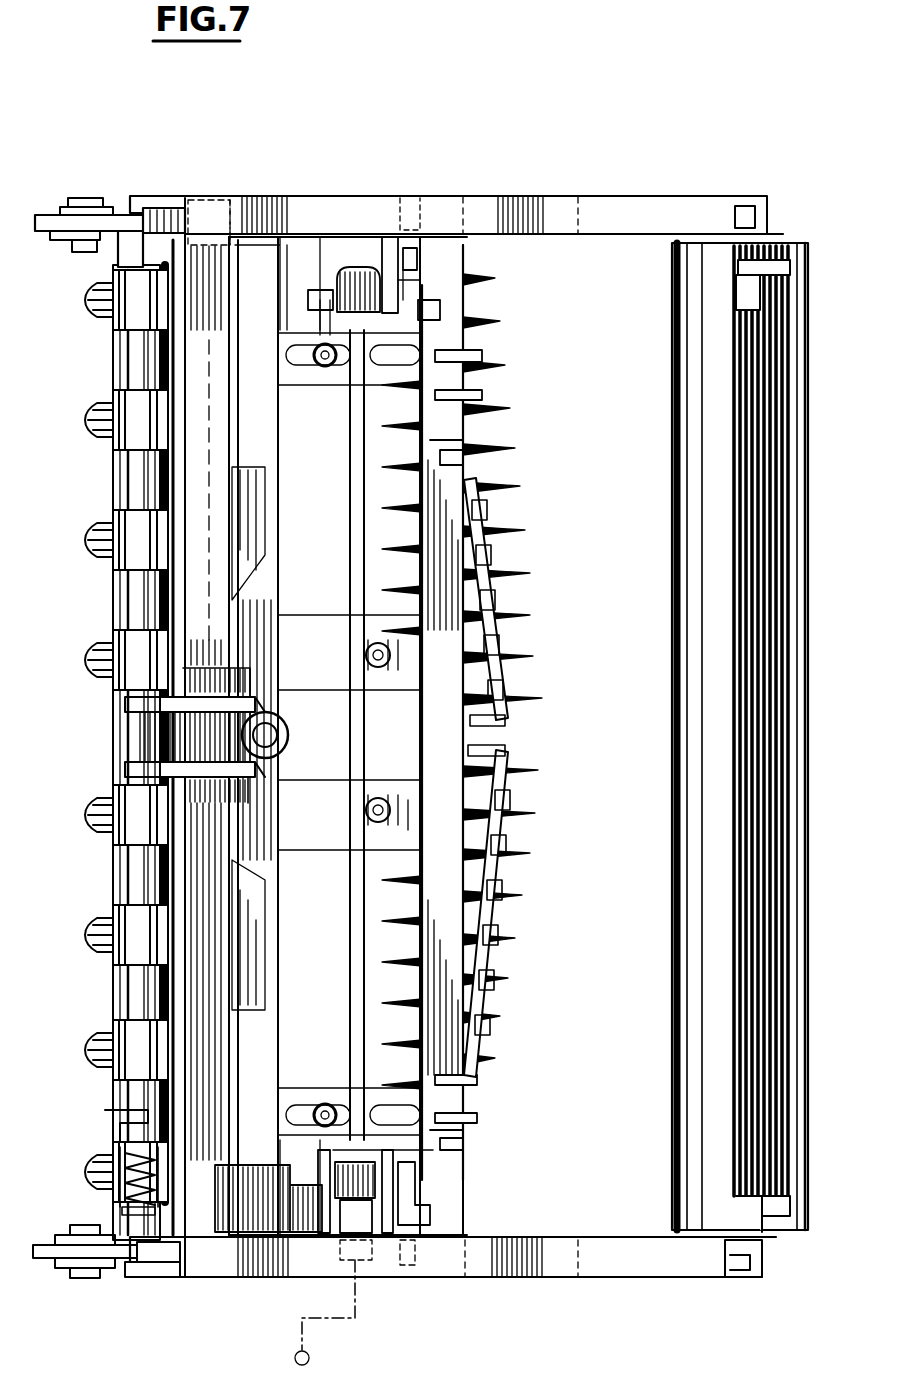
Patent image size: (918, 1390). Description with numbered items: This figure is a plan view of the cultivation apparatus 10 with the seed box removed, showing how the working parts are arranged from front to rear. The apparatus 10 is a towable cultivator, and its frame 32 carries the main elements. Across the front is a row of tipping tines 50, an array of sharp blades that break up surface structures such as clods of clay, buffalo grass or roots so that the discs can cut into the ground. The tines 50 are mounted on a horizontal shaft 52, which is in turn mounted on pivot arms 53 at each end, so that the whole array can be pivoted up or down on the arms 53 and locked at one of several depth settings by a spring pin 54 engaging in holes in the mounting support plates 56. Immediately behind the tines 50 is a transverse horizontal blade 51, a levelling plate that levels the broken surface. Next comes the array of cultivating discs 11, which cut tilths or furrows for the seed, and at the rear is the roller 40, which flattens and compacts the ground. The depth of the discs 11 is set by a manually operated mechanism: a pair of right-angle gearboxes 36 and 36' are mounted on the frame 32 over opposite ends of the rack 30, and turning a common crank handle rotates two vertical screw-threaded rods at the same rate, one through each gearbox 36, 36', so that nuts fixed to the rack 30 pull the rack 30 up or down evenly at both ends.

The apparatus 10 is at (450, 152).
The cultivating discs 11 is at (498, 580).
The rack 30 is at (448, 450).
The frame 32 is at (552, 226).
The right-angle gearbox 36 is at (452, 1184).
The right-angle gearbox 36' is at (437, 290).
The roller 40 is at (695, 265).
The tines 50 is at (104, 302).
The transverse horizontal blade 51 is at (155, 215).
The horizontal shaft 52 is at (130, 600).
The pivot arms 53 is at (75, 225).
The spring pin 54 is at (110, 1150).
The mounting support plates 56 is at (110, 1260).